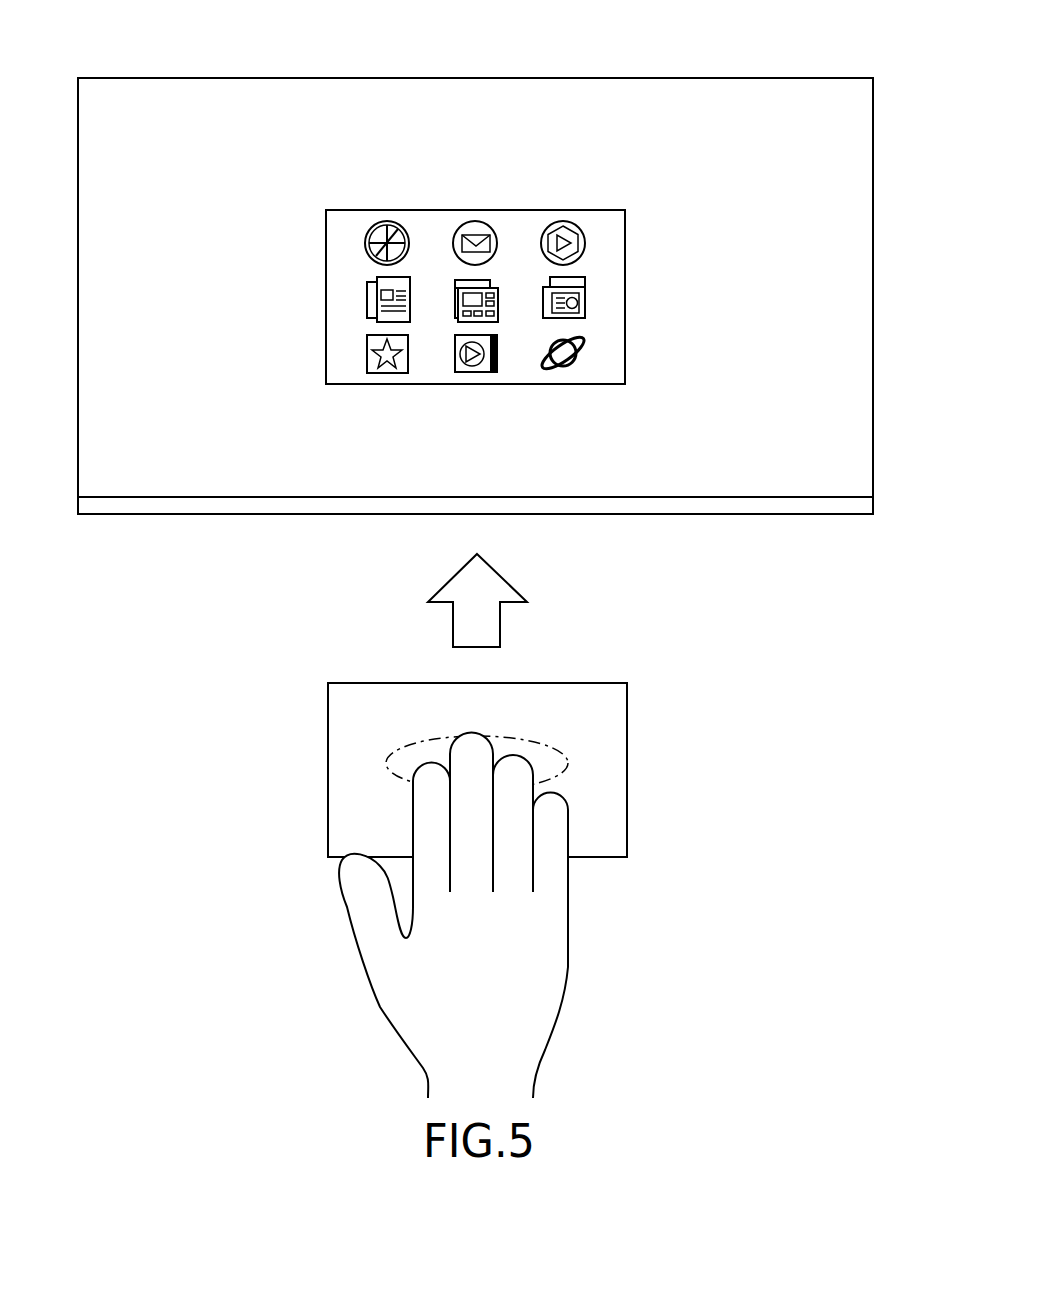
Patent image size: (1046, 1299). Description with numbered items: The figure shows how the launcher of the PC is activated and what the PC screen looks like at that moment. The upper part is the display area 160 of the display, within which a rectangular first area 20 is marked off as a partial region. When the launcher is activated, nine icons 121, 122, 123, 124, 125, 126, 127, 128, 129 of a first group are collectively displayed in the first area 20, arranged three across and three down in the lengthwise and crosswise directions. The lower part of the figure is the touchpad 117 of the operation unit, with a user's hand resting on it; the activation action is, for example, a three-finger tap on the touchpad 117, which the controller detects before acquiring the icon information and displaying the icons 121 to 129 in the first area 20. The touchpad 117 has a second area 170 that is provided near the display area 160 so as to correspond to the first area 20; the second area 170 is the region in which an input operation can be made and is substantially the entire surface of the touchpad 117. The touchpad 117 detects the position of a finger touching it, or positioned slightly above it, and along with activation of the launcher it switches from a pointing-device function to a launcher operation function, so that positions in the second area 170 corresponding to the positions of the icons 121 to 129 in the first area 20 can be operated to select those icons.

The first area 20 is at (347, 210).
The touchpad 117 is at (583, 683).
The icon 121 is at (388, 218).
The icon 122 is at (477, 218).
The icon 123 is at (565, 218).
The icon 124 is at (412, 298).
The icon 125 is at (499, 298).
The icon 126 is at (587, 298).
The icon 127 is at (367, 362).
The icon 128 is at (455, 362).
The icon 129 is at (578, 362).
The display area 160 is at (758, 78).
The second area 170 is at (617, 830).